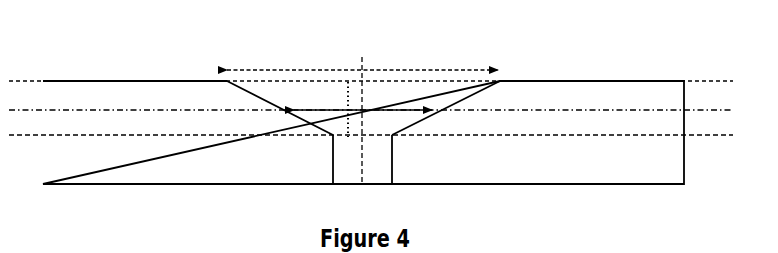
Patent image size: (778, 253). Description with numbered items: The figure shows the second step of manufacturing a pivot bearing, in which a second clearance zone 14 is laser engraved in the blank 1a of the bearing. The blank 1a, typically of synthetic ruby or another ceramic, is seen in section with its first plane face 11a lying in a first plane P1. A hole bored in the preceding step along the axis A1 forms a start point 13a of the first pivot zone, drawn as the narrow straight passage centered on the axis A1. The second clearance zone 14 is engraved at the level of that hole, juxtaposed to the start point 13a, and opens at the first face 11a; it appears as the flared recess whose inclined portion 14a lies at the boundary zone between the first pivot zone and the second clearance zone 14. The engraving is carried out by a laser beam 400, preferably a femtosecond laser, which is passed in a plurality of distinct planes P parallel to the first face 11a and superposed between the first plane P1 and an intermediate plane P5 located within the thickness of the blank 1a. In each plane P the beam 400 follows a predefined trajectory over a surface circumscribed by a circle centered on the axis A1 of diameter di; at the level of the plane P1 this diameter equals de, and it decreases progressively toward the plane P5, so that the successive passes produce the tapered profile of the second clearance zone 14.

The blank 1a is at (572, 95).
The first plane face 11a is at (617, 80).
The second clearance zone 14 is at (350, 116).
The portion 14a is at (322, 130).
The start point of the first pivot zone 13a is at (347, 162).
The axis A1 is at (363, 157).
The laser beam 400 is at (348, 105).
The first plane P1 is at (384, 80).
The distinct planes P is at (379, 109).
The intermediate plane P5 is at (384, 135).
The diameter of the circle at plane P1 de is at (408, 70).
The diameter of the circle in plane P di is at (403, 112).